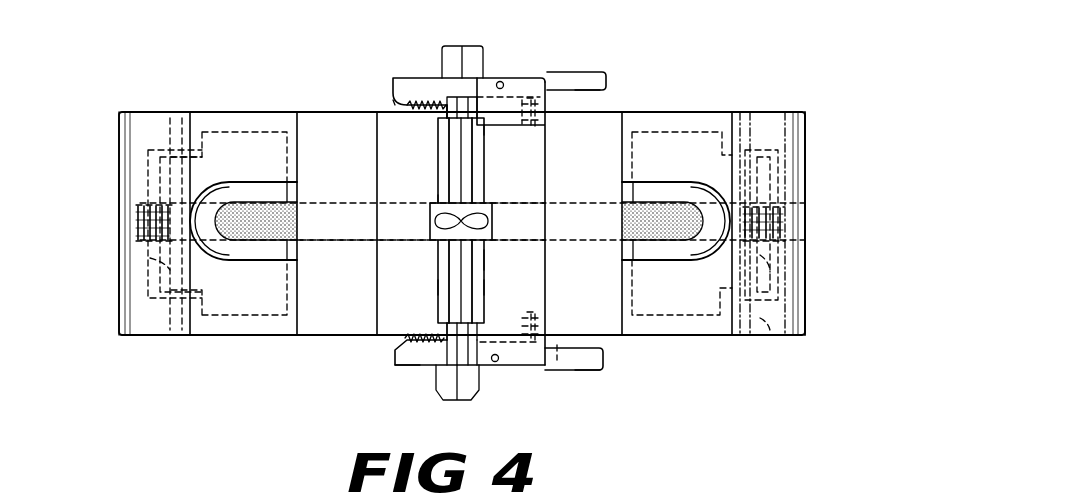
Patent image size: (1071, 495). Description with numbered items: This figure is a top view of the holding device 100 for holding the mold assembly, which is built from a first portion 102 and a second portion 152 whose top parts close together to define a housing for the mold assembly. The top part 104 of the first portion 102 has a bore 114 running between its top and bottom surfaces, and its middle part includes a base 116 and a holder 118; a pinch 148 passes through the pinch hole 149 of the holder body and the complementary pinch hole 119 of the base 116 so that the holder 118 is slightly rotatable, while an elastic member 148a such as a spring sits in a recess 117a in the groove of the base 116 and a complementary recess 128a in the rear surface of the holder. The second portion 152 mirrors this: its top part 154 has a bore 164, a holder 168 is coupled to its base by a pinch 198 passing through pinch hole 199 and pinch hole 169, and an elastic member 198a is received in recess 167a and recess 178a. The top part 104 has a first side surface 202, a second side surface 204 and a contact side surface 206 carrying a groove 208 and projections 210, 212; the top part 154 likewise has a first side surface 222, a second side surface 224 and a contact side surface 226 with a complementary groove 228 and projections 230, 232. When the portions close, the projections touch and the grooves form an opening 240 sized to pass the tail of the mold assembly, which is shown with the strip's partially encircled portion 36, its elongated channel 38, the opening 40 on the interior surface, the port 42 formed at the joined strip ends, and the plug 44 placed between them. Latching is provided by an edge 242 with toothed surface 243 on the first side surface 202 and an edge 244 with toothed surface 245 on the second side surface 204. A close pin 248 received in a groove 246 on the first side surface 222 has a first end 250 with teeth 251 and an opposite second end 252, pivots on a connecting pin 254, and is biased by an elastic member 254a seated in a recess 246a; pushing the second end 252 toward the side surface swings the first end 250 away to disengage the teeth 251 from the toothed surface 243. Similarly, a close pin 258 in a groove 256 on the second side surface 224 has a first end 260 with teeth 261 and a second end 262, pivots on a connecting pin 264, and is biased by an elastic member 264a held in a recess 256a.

The holding device 100 is at (105, 70).
The first portion 102 is at (116, 125).
The top part 104 is at (220, 122).
The bore 114 is at (252, 190).
The base 116 is at (127, 333).
The recess 117a is at (150, 210).
The holder 118 is at (234, 305).
The pinch hole 119 is at (173, 335).
The recess 128a is at (177, 202).
The pinch 148 is at (167, 310).
The elastic member 148a is at (148, 252).
The pinch hole 149 is at (170, 262).
The second portion 152 is at (815, 112).
The top part 154 is at (765, 120).
The bore 164 is at (700, 190).
The recess 167a is at (790, 204).
The holder 168 is at (705, 338).
The pinch hole 169 is at (760, 320).
The recess 178a is at (762, 183).
The pinch 198 is at (745, 338).
The elastic member 198a is at (770, 250).
The pinch hole 199 is at (773, 277).
The first side surface 202 is at (307, 337).
The second side surface 204 is at (290, 112).
The contact side surface 206 is at (443, 287).
The groove 208 is at (435, 200).
The projection 210 is at (438, 253).
The projection 212 is at (447, 147).
The first side surface 222 is at (638, 337).
The second side surface 224 is at (684, 110).
The contact side surface 226 is at (482, 290).
The groove 228 is at (490, 204).
The projection 230 is at (482, 270).
The projection 232 is at (481, 140).
The opening 240 is at (538, 300).
The edge 242 is at (402, 338).
The toothed surface 243 is at (420, 367).
The edge 244 is at (407, 107).
The toothed surface 245 is at (445, 116).
The groove 246 is at (482, 350).
The recess 246a is at (536, 310).
The close pin 248 is at (580, 372).
The first end 250 is at (395, 362).
The teeth 251 is at (428, 343).
The second end 252 is at (603, 368).
The connecting pin 254 is at (497, 363).
The elastic member 254a is at (557, 347).
The groove 256 is at (488, 97).
The recess 256a is at (550, 123).
The close pin 258 is at (583, 90).
The first end 260 is at (393, 95).
The teeth 261 is at (410, 114).
The second end 262 is at (605, 76).
The connecting pin 264 is at (501, 81).
The elastic member 264a is at (537, 78).
The partially encircled portion 36 is at (430, 215).
The elongated channel 38 is at (438, 229).
The opening 40 is at (430, 242).
The port 42 is at (483, 203).
The plug 44 is at (472, 46).